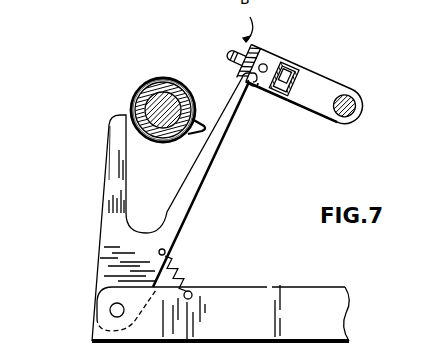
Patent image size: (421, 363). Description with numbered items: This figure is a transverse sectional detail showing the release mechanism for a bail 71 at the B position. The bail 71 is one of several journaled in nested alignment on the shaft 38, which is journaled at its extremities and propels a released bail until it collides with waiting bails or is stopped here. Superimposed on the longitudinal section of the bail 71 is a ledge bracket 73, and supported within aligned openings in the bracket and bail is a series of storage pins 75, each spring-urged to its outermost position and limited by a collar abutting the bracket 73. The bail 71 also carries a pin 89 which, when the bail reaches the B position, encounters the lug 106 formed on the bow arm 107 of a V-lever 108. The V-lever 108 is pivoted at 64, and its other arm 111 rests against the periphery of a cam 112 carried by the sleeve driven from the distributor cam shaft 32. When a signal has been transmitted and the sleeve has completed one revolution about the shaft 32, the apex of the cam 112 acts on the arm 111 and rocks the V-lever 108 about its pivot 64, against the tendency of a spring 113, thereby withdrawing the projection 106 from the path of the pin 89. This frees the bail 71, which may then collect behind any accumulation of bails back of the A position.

The distributor cam shaft 32 is at (160, 100).
The shaft 38 is at (356, 97).
The pivot 64 is at (110, 310).
The bail 71 is at (323, 81).
The ledge bracket 73 is at (282, 60).
The storage pin 75 is at (232, 50).
The pin 89 is at (266, 64).
The lug 106 is at (256, 87).
The bow arm 107 is at (203, 188).
The V-lever 108 is at (108, 222).
The arm 111 is at (120, 117).
The clutch lever resetting cam 112 is at (150, 82).
The spring 113 is at (187, 270).